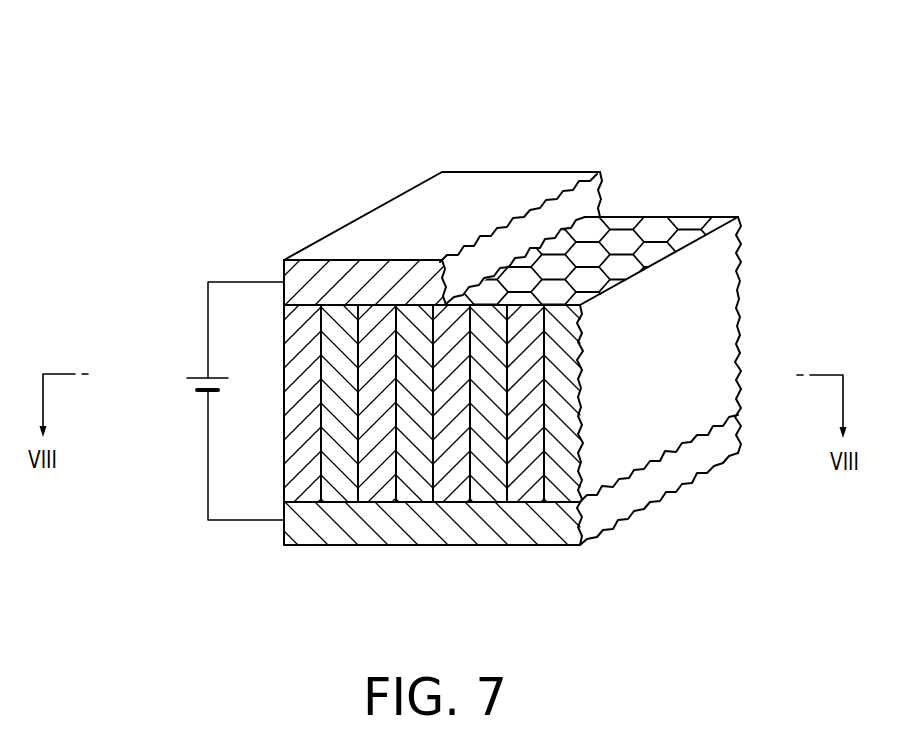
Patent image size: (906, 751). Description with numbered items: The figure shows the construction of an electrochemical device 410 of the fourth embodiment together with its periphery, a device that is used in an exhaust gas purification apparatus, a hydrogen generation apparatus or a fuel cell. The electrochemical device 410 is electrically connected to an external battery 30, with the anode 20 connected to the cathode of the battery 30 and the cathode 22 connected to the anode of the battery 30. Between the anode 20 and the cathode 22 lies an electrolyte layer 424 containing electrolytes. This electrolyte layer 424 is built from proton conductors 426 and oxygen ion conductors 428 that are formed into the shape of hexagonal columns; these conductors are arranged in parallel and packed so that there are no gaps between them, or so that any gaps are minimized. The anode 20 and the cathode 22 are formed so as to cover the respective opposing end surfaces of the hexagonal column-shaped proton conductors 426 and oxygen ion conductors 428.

The electrochemical device 410 is at (723, 150).
The anode 20 is at (472, 200).
The cathode 22 is at (477, 528).
The electrolyte layer 424 is at (493, 333).
The proton conductors 426 is at (302, 315).
The oxygen ion conductors 428 is at (342, 317).
The battery 30 is at (203, 377).